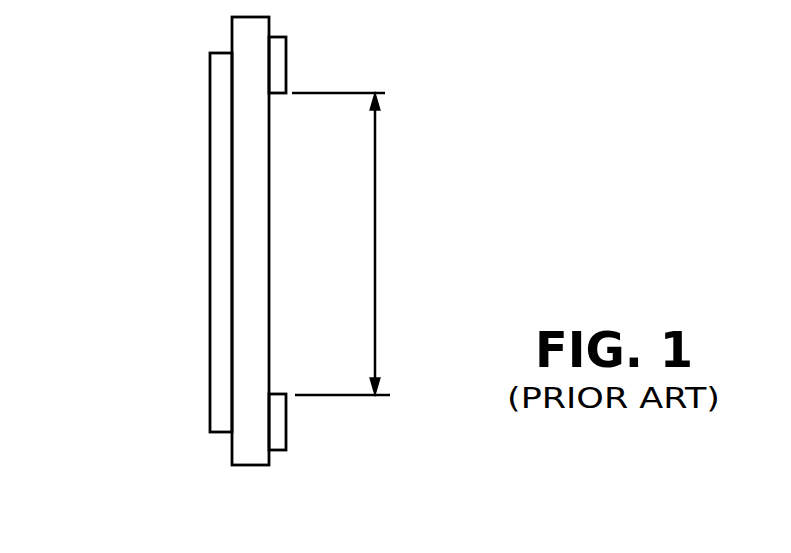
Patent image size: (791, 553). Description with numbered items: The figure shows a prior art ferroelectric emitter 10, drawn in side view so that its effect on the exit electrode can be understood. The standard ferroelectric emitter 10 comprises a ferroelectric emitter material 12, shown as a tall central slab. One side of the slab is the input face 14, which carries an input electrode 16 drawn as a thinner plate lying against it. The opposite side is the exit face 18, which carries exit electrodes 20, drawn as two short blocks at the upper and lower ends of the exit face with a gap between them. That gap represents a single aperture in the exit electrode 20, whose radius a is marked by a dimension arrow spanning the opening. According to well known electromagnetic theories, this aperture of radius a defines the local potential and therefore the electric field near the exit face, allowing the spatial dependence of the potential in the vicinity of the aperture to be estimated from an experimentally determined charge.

The ferroelectric emitter 10 is at (150, 91).
The ferroelectric emitter material 12 is at (253, 465).
The input face 14 is at (232, 35).
The input electrode 16 is at (210, 223).
The exit face 18 is at (270, 457).
The exit electrodes 20 is at (287, 55).
The aperture radius a is at (375, 247).